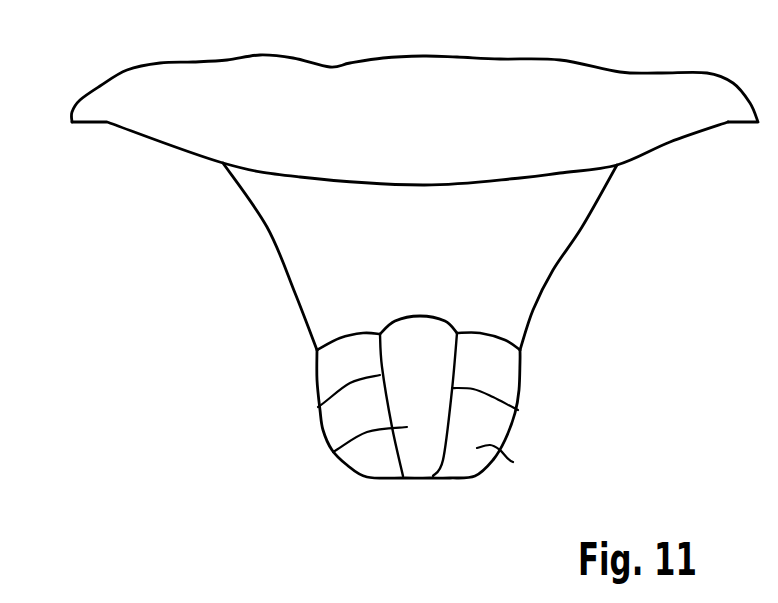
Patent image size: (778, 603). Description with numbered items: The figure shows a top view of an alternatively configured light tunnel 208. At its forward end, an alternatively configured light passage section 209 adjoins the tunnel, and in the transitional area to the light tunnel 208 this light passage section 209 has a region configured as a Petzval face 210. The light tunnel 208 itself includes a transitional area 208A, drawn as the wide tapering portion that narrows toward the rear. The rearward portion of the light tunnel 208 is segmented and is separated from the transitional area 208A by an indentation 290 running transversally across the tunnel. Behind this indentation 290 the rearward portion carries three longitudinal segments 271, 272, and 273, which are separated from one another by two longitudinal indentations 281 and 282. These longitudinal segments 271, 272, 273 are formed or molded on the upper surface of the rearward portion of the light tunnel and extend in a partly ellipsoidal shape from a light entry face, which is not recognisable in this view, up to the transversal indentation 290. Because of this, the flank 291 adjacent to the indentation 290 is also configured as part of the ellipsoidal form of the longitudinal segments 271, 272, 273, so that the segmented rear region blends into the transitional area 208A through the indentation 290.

The light tunnel 208 is at (294, 300).
The transitional area 208A is at (553, 270).
The light passage section 209 is at (83, 123).
The Petzval face 210 is at (173, 148).
The longitudinal segment 271 is at (513, 462).
The longitudinal segment 272 is at (333, 452).
The longitudinal segment 273 is at (367, 462).
The longitudinal indentation 281 is at (518, 410).
The longitudinal indentation 282 is at (318, 407).
The indentation 290 is at (420, 315).
The flank 291 is at (505, 362).